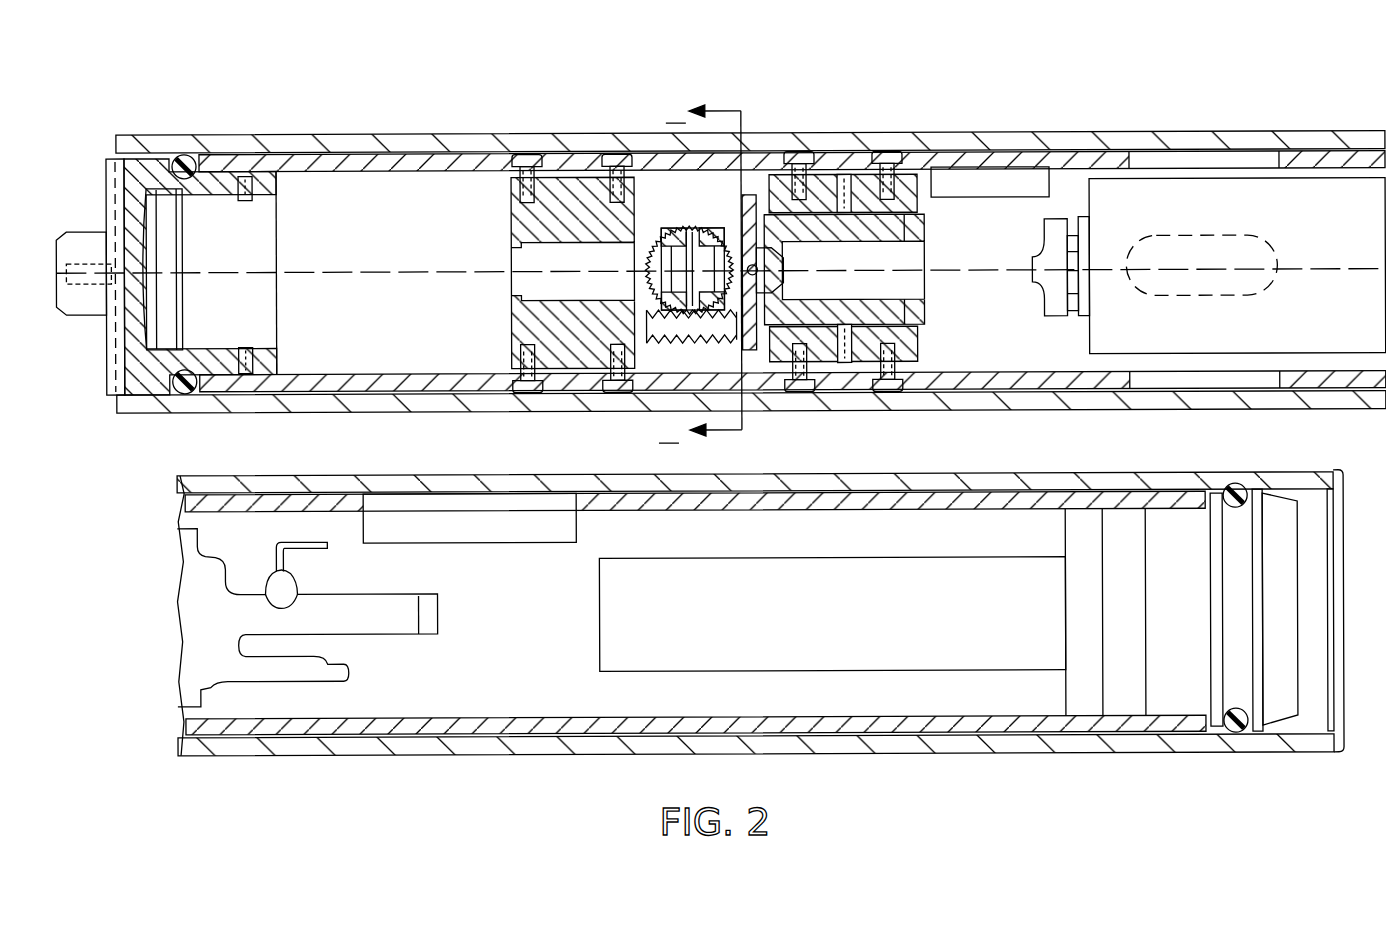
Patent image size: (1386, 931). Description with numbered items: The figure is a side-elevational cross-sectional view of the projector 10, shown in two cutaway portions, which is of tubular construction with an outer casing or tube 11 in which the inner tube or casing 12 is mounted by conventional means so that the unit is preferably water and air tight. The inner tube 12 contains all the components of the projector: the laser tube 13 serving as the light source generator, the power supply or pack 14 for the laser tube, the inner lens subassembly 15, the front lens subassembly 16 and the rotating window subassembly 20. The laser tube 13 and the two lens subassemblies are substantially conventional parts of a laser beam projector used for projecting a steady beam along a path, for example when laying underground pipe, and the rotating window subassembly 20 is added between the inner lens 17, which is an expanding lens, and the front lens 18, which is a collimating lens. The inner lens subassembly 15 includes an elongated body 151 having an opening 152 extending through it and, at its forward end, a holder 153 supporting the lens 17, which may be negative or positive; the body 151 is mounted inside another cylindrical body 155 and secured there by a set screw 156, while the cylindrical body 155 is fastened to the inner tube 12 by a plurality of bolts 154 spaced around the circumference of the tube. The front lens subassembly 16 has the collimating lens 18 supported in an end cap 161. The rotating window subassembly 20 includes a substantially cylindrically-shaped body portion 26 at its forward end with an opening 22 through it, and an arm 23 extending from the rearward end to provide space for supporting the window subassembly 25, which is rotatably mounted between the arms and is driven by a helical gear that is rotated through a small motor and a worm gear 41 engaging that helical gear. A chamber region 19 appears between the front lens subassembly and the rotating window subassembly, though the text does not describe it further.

The projector 10 is at (589, 118).
The outer casing or tube 11 is at (1037, 135).
The inner tube or casing 12 is at (1108, 155).
The laser tube 13 is at (1220, 196).
The power supply or pack 14 is at (960, 565).
The inner lens subassembly 15 is at (907, 250).
The front lens subassembly 16 is at (157, 190).
The inner lens 17 is at (756, 245).
The front lens 18 is at (150, 292).
The chamber 19 is at (305, 270).
The rotating window subassembly 20 is at (533, 226).
The opening 22 is at (548, 243).
The arm 23 is at (650, 207).
The window subassembly 25 is at (710, 226).
The body portion 26 is at (530, 218).
The worm gear 41 is at (685, 342).
The elongated body 151 is at (890, 215).
The opening 152 is at (923, 254).
The holder 153 is at (800, 208).
The bolts 154 is at (802, 384).
The cylindrical body 155 is at (909, 180).
The set screw 156 is at (850, 345).
The end cap 161 is at (197, 167).